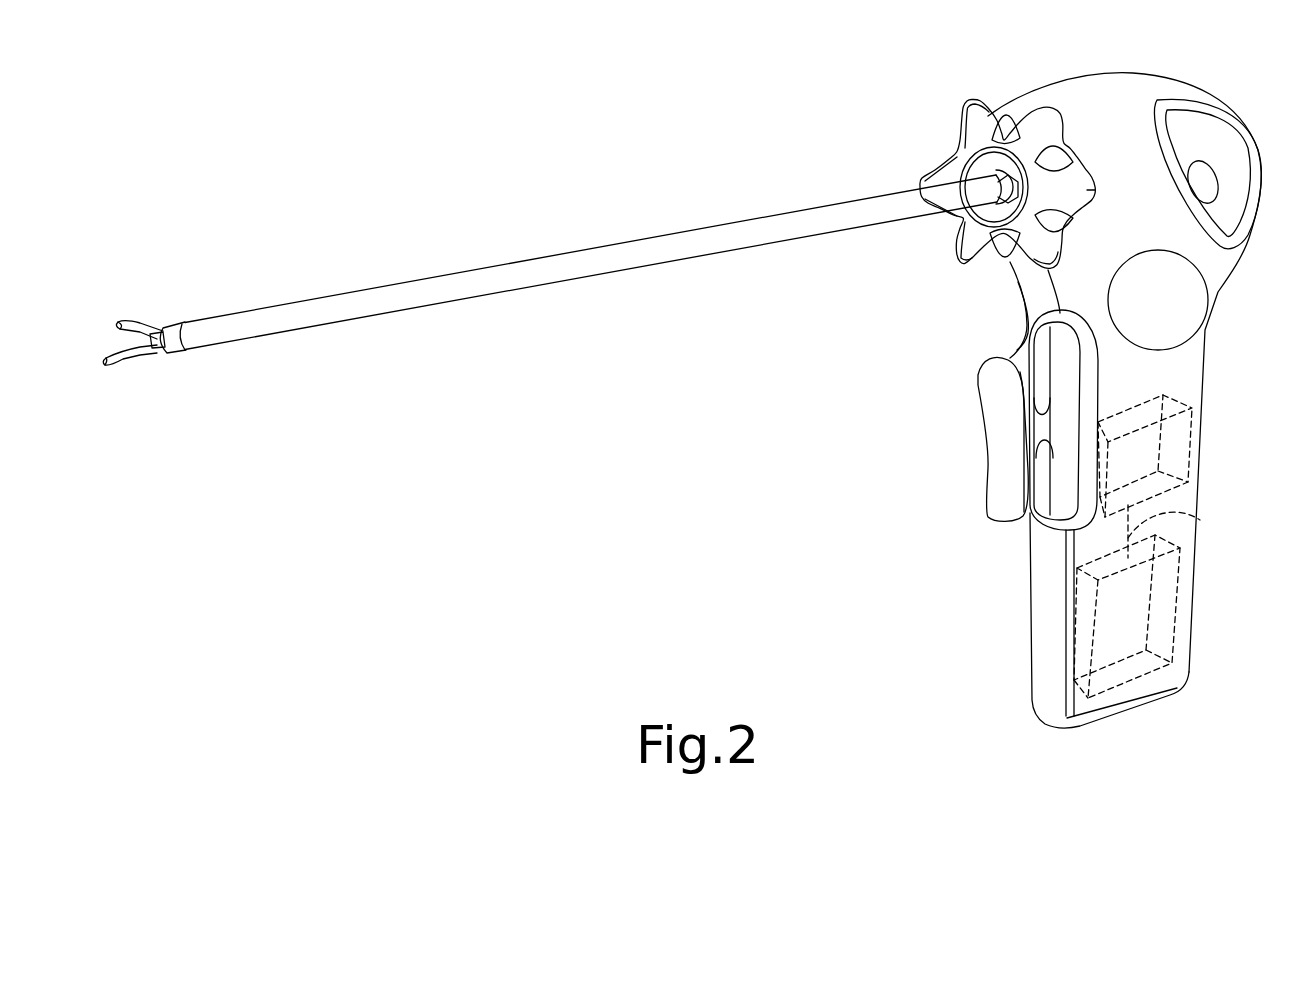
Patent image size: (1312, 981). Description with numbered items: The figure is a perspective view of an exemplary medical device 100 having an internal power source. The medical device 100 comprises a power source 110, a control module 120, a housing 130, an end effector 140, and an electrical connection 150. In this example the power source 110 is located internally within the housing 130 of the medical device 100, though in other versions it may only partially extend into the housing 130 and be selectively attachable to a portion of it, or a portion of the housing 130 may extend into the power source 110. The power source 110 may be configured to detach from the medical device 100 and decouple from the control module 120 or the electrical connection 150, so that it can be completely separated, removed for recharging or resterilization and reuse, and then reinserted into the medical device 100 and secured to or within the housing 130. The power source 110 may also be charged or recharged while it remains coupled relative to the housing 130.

The medical device 100 is at (848, 462).
The power source 110 is at (1180, 595).
The control module 120 is at (1190, 440).
The housing 130 is at (1227, 287).
The end effector 140 is at (150, 376).
The electrical connection 150 is at (1195, 520).